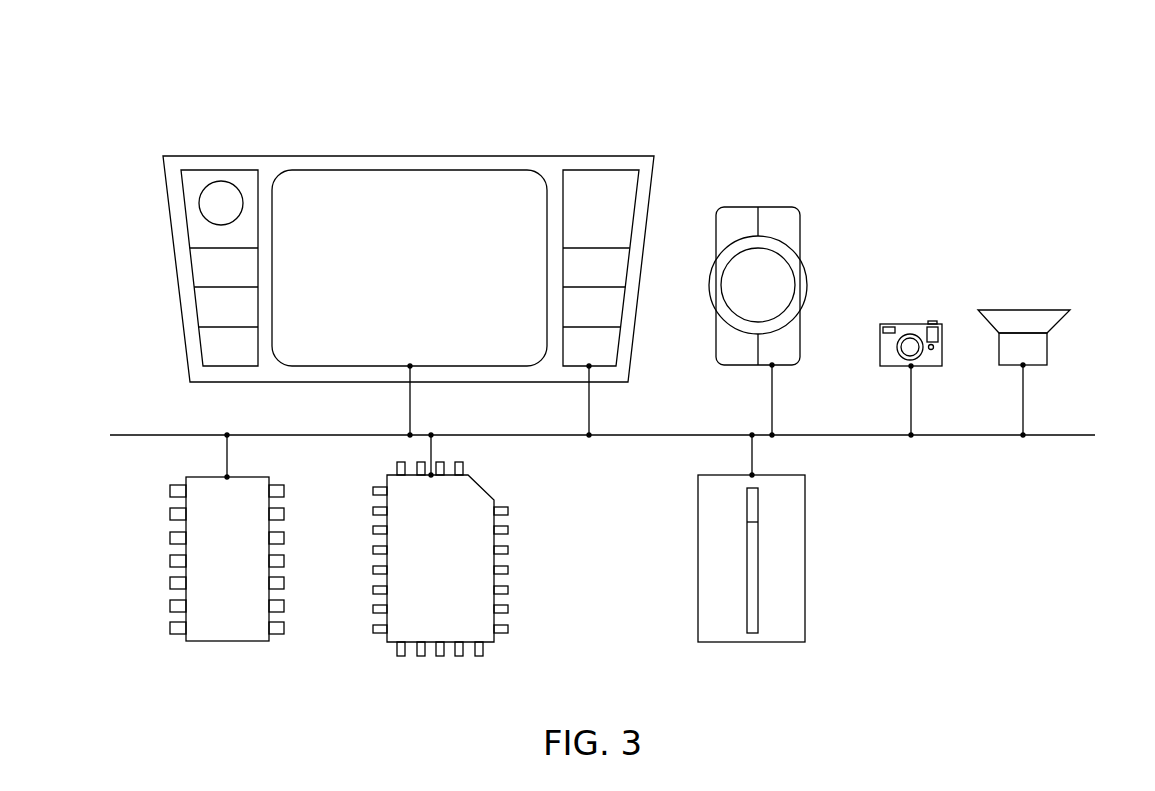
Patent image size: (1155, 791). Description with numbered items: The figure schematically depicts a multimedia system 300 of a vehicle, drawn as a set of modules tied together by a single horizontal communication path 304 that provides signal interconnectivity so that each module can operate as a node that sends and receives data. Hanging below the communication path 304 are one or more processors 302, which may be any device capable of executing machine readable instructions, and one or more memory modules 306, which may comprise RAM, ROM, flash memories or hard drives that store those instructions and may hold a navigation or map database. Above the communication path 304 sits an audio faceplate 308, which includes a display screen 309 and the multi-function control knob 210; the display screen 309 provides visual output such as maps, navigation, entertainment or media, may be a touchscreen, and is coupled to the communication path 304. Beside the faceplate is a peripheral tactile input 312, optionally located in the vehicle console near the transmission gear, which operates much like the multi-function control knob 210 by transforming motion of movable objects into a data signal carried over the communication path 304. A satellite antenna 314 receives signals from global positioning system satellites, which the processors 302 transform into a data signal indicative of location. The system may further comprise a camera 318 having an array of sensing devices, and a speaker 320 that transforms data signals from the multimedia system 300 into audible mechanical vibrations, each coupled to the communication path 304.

The multimedia system 300 is at (936, 113).
The processors 302 is at (392, 643).
The communication path 304 is at (135, 435).
The memory modules 306 is at (225, 642).
The audio faceplate 308 is at (468, 157).
The display screen 309 is at (392, 183).
The multi-function control knob 210 is at (221, 181).
The peripheral tactile input 312 is at (745, 207).
The satellite antenna 314 is at (752, 643).
The camera 318 is at (910, 324).
The speaker 320 is at (1020, 310).